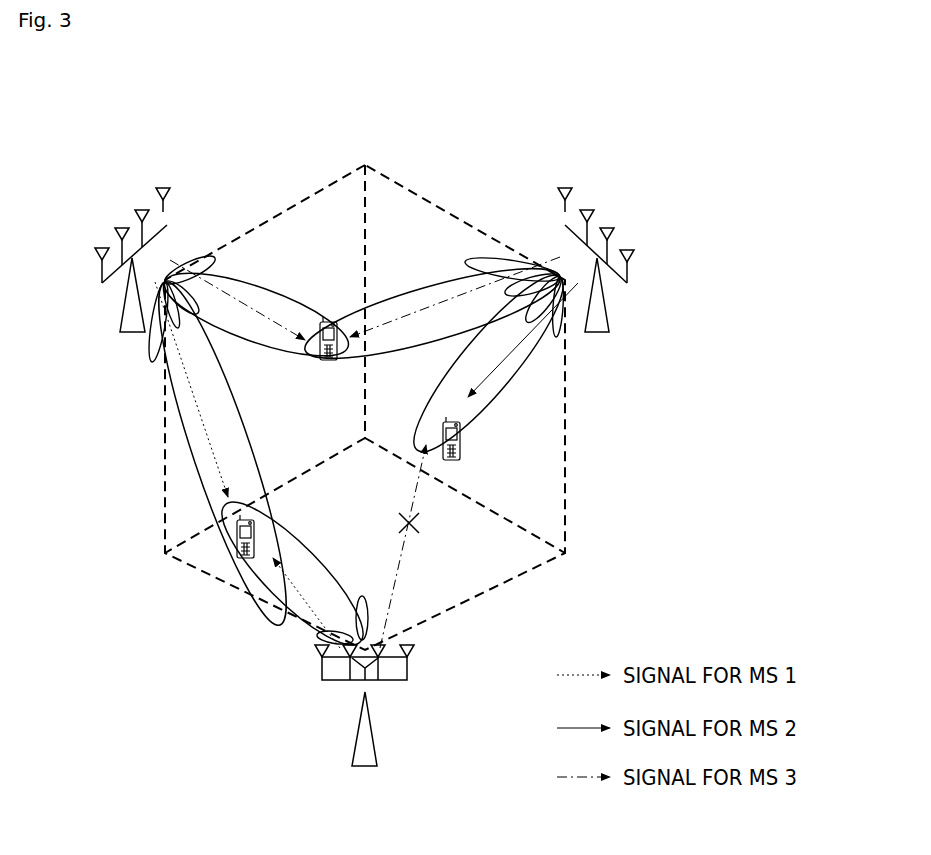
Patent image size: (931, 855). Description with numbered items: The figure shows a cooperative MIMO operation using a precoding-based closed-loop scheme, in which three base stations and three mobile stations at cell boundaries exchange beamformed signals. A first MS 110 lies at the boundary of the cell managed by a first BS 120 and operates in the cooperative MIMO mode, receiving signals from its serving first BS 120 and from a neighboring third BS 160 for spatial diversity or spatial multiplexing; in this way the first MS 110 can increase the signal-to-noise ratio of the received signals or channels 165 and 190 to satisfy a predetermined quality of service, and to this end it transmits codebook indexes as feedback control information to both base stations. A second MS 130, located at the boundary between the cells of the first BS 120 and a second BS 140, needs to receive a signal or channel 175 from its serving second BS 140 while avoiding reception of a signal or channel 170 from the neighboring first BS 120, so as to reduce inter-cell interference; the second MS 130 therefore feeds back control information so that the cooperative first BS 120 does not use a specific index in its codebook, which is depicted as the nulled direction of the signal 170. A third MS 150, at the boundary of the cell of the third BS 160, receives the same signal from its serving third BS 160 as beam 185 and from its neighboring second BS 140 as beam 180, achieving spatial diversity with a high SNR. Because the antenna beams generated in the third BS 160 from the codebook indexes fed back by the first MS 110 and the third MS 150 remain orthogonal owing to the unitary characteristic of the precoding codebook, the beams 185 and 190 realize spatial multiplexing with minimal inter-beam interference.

The first MS 110 is at (288, 520).
The first BS 120 is at (364, 744).
The second MS 130 is at (491, 444).
The second BS 140 is at (628, 268).
The third MS 150 is at (320, 305).
The third BS 160 is at (105, 268).
The signal or channel 165 is at (308, 595).
The signal or channel 170 is at (400, 567).
The signal or channel 175 is at (510, 353).
The signal or channel 180 is at (457, 295).
The signal or channel 185 is at (237, 297).
The signal or channel 190 is at (200, 412).